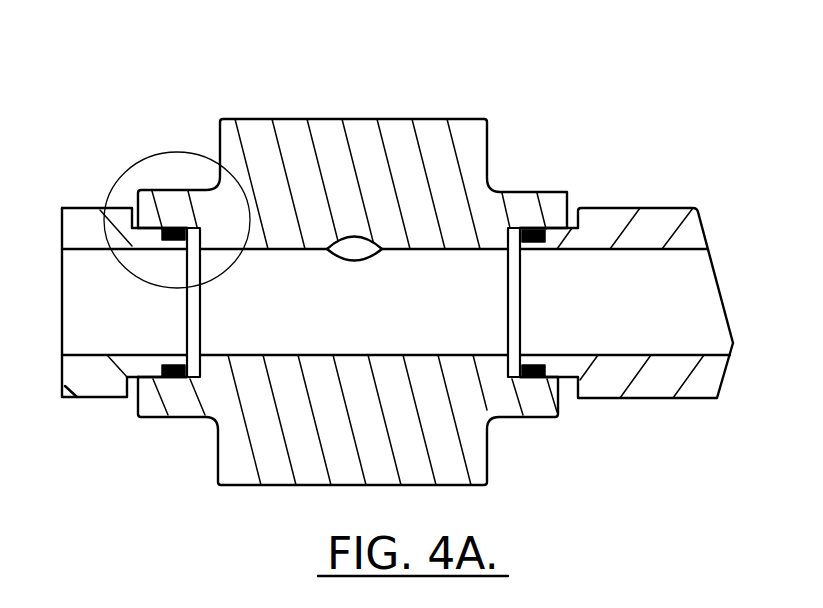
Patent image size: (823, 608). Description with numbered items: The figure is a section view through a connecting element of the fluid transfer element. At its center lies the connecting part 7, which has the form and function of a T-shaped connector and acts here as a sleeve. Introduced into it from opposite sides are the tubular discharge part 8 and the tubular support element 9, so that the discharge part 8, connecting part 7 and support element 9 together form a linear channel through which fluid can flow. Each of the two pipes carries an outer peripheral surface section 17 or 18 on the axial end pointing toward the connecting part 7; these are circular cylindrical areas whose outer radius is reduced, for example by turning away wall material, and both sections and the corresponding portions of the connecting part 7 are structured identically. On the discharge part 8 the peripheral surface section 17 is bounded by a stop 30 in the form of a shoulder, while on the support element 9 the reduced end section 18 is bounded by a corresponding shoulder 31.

The connecting part 7 is at (393, 119).
The discharge part 8 is at (83, 213).
The support element 9 is at (613, 227).
The outer peripheral surface section 17 is at (128, 380).
The outer peripheral surface section 18 is at (567, 380).
The stop 30 is at (135, 214).
The shoulder 31 is at (571, 228).